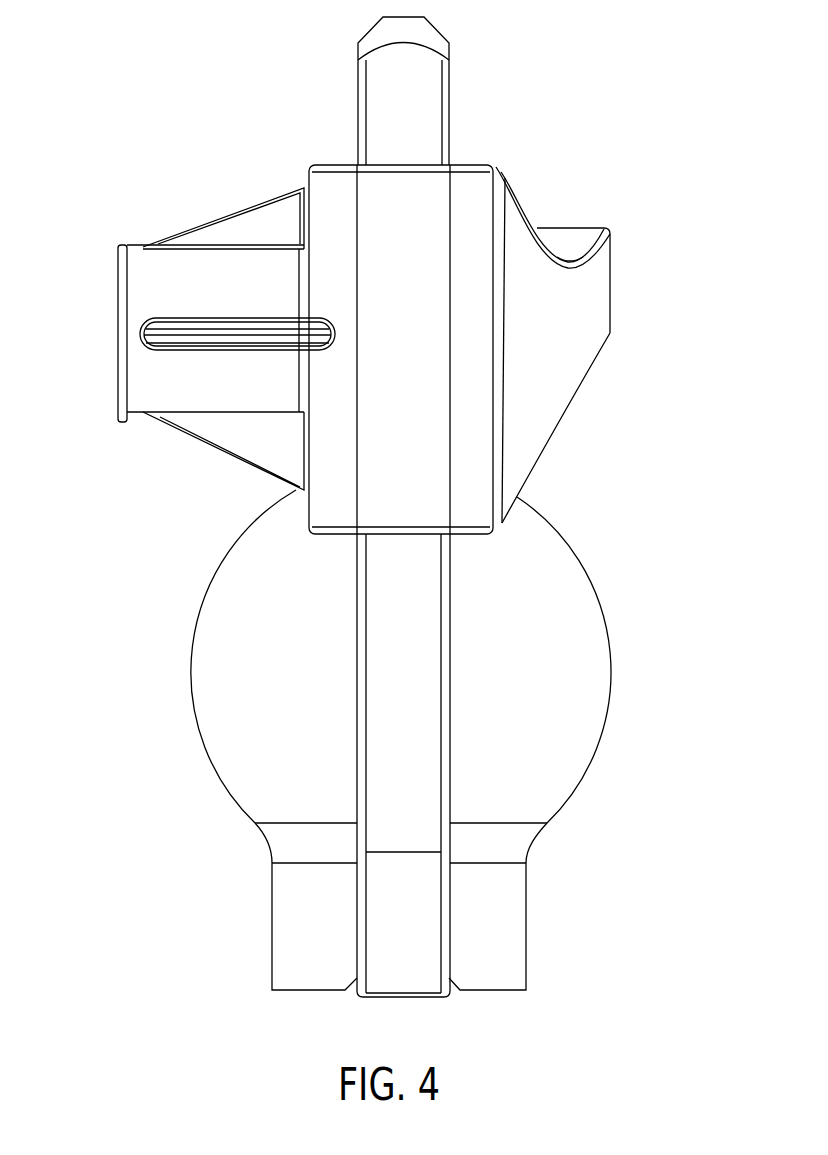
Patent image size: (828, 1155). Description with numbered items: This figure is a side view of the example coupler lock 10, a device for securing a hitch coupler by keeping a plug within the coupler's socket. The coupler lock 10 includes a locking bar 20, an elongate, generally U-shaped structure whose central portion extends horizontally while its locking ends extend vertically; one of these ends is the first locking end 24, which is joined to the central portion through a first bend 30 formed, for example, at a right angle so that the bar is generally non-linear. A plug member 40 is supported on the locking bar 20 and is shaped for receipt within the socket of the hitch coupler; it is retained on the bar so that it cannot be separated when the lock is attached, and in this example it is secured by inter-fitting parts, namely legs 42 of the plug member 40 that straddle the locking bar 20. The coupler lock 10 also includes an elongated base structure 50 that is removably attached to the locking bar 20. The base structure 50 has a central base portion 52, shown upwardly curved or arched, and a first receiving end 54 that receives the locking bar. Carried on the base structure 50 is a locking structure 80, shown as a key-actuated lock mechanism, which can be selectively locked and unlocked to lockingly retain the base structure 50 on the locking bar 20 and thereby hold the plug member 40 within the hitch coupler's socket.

The coupler lock 10 is at (93, 128).
The locking bar 20 is at (366, 25).
The first locking end 24 is at (380, 95).
The first bend 30 is at (392, 988).
The plug member 40 is at (618, 655).
The legs 42 is at (285, 927).
The base structure 50 is at (503, 145).
The central base portion 52 is at (579, 238).
The first receiving end 54 is at (482, 455).
The locking structure 80 is at (117, 332).